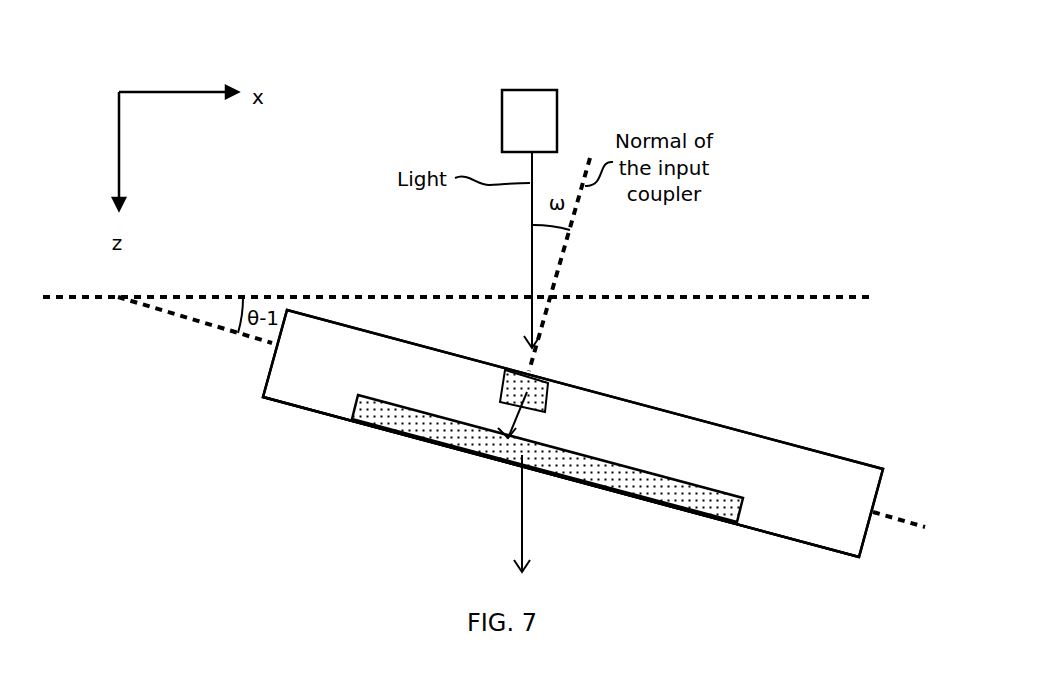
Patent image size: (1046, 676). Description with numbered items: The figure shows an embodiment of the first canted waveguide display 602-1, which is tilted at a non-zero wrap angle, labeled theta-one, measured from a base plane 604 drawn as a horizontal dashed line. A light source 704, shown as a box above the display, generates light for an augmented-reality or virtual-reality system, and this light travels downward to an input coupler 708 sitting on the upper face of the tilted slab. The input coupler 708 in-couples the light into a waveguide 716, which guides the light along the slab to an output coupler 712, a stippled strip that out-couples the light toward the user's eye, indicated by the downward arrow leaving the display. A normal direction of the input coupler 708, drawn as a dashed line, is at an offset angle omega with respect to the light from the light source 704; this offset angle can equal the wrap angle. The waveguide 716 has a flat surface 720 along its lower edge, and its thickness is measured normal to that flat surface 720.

The light source 704 is at (502, 122).
The input coupler 708 is at (542, 388).
The output coupler 712 is at (458, 438).
The waveguide 716 is at (343, 396).
The flat surface 720 is at (293, 405).
The base plane 604 is at (825, 297).
The first canted waveguide display 602-1 is at (755, 437).